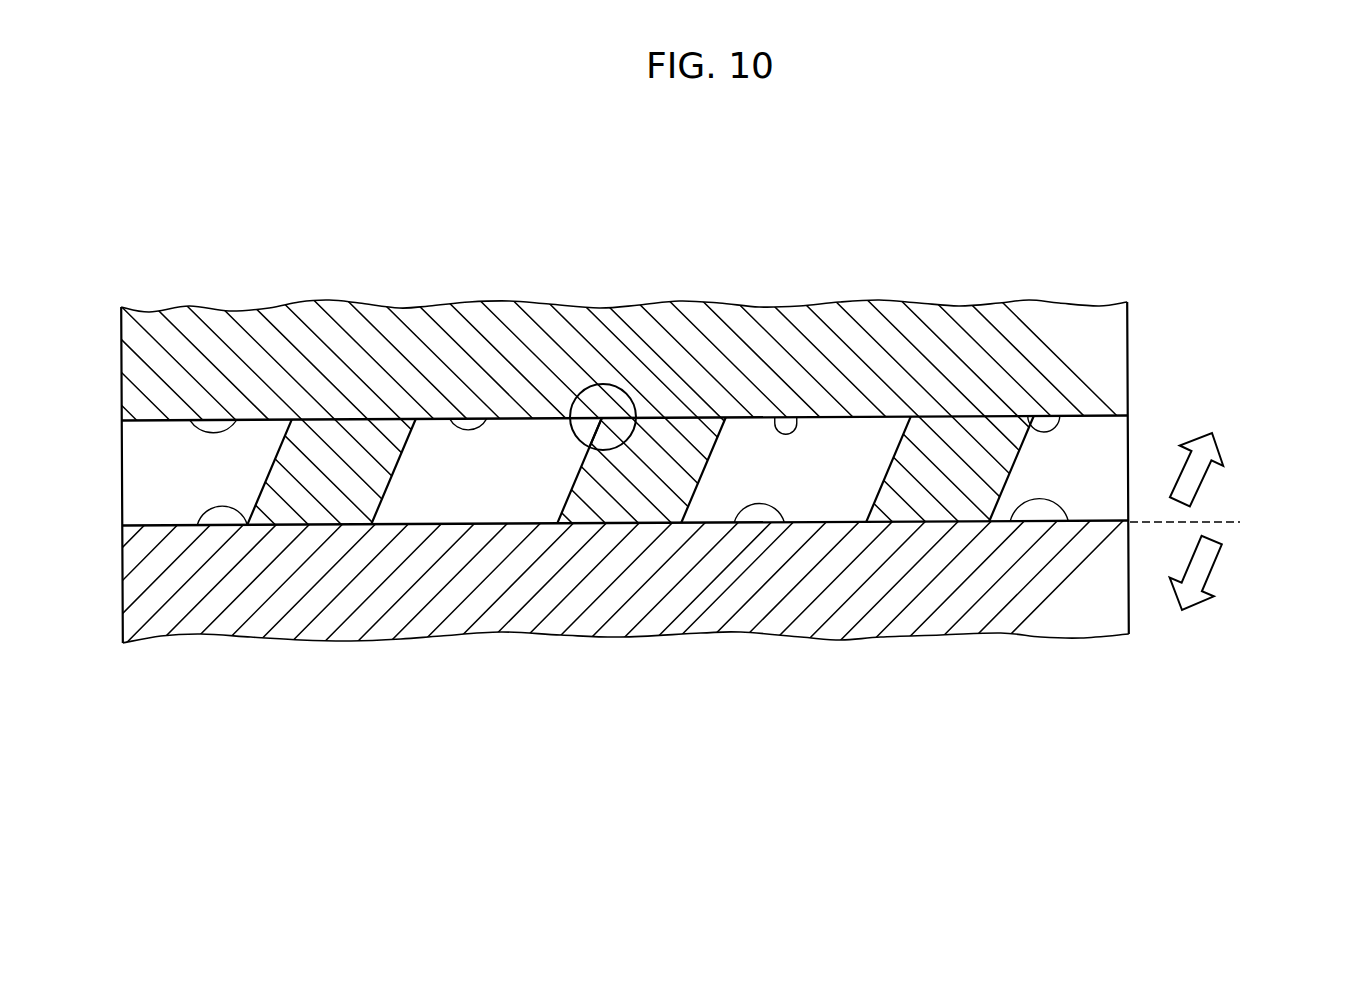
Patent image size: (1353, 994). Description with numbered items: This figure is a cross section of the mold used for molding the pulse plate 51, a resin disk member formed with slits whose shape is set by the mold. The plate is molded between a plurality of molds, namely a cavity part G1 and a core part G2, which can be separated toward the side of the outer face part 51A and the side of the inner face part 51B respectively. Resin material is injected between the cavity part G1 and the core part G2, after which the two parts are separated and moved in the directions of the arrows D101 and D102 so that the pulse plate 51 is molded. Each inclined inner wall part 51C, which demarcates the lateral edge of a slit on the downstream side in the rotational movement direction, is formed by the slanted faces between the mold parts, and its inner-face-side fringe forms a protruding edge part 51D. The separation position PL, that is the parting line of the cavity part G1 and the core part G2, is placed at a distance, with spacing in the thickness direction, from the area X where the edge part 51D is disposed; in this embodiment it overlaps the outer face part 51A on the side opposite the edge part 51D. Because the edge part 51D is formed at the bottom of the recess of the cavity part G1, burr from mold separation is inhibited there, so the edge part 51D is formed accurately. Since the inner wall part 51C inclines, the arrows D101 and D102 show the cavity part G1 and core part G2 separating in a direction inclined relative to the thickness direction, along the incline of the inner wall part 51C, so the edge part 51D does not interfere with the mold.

The pulse plate 51 is at (1105, 444).
The outer face part 51A is at (1020, 510).
The inner face part 51B is at (447, 418).
The inner wall part 51C is at (271, 468).
The edge part 51D is at (583, 428).
The area where the edge part is disposed X is at (617, 387).
The cavity part G1 is at (1062, 328).
The core part G2 is at (1082, 600).
The separation position (parting line) PL is at (1228, 523).
The arrow indicating separation direction of cavity part D101 is at (1194, 475).
The arrow indicating separation direction of core part D102 is at (1197, 568).